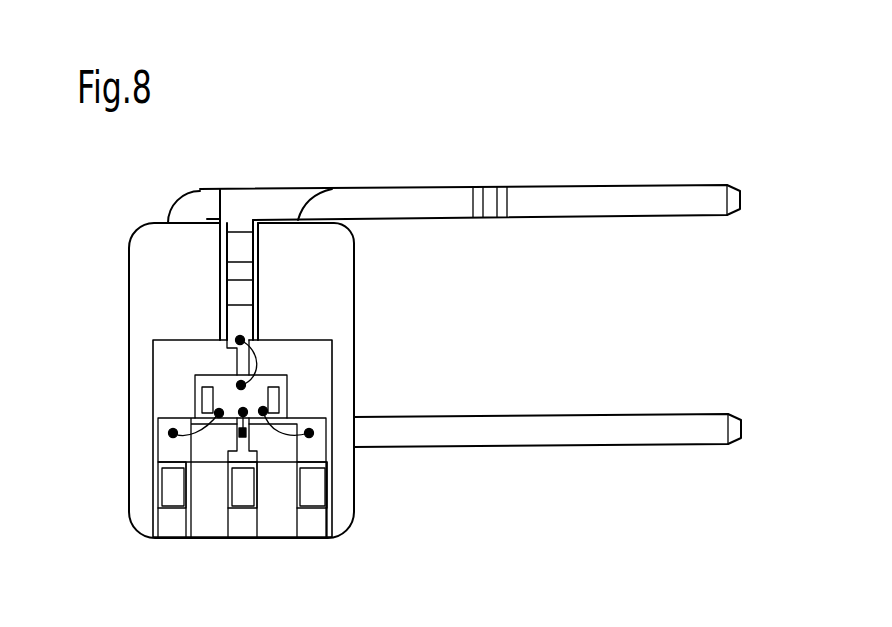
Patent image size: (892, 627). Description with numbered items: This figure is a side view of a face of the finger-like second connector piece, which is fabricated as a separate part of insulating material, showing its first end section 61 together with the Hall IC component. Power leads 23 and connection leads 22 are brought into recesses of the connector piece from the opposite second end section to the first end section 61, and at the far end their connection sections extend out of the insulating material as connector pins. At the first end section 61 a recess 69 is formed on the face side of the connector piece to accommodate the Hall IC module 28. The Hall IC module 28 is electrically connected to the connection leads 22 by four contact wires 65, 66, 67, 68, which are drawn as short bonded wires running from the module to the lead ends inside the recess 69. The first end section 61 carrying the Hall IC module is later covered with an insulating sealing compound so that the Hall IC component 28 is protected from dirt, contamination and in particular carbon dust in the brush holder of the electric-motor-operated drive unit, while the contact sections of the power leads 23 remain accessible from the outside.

The connection leads 22 is at (250, 320).
The power leads 23 is at (600, 202).
The Hall IC module 28 is at (265, 384).
The first end section 61 is at (148, 242).
The contact wire 65 is at (258, 357).
The contact wire 66 is at (265, 414).
The contact wire 67 is at (193, 435).
The contact wire 68 is at (240, 432).
The recess 69 is at (152, 358).